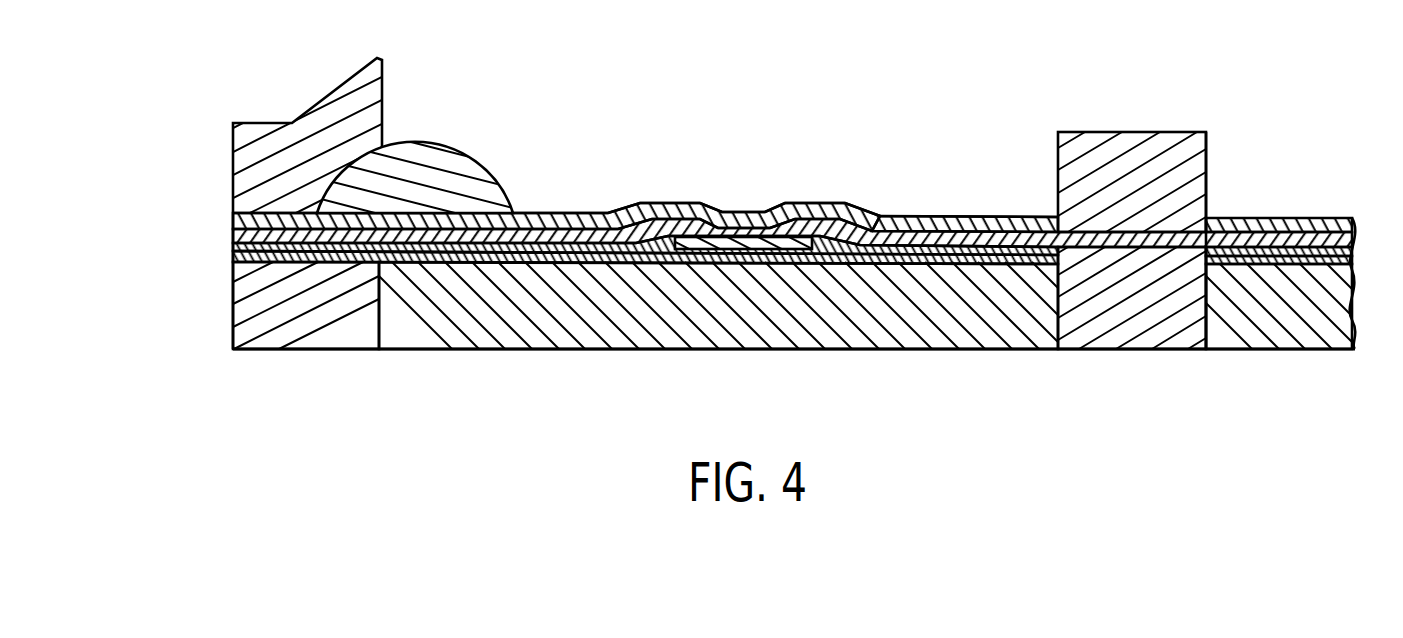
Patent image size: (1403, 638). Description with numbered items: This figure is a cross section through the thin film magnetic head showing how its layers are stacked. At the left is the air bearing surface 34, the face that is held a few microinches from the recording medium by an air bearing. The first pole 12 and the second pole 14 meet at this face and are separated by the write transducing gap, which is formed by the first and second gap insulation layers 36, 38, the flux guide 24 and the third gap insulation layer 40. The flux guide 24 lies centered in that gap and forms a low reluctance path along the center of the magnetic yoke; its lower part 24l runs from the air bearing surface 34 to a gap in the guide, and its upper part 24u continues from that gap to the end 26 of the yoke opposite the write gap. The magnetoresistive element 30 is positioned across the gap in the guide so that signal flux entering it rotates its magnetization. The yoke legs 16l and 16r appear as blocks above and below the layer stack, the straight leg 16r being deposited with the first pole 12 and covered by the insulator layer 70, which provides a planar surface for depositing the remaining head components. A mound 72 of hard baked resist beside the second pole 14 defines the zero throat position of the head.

The first pole 12 is at (303, 340).
The second pole 14 is at (355, 83).
The leg of the magnetic yoke 16l is at (1127, 140).
The leg of the magnetic yoke 16r is at (1108, 347).
The flux guide 24 is at (532, 217).
The lower part of flux guide 24l is at (604, 217).
The upper part of flux guide 24u is at (877, 227).
The end of the yoke 26 is at (1197, 178).
The magnetoresistive element 30 is at (760, 213).
The air bearing surface 34 is at (230, 213).
The first gap insulation layer 36 is at (470, 262).
The second gap insulation layer 38 is at (532, 262).
The third gap insulation layer 40 is at (993, 225).
The insulator layer 70 is at (752, 345).
The mound 72 is at (447, 157).